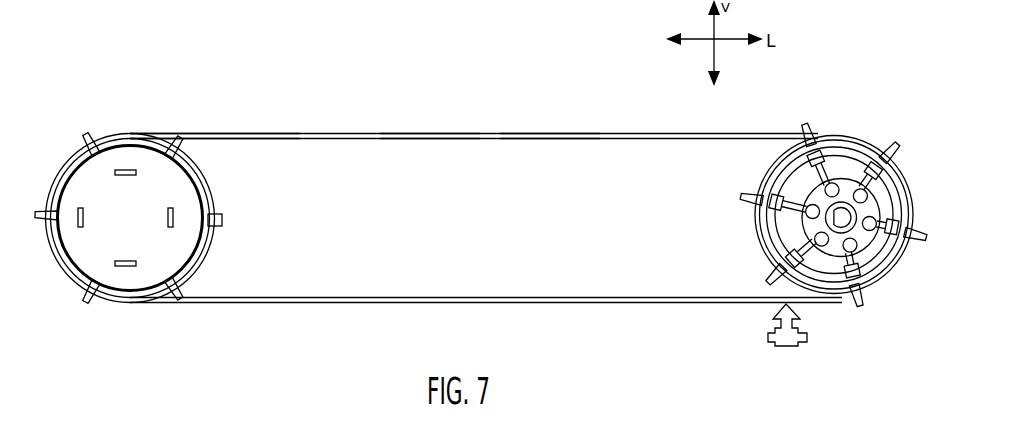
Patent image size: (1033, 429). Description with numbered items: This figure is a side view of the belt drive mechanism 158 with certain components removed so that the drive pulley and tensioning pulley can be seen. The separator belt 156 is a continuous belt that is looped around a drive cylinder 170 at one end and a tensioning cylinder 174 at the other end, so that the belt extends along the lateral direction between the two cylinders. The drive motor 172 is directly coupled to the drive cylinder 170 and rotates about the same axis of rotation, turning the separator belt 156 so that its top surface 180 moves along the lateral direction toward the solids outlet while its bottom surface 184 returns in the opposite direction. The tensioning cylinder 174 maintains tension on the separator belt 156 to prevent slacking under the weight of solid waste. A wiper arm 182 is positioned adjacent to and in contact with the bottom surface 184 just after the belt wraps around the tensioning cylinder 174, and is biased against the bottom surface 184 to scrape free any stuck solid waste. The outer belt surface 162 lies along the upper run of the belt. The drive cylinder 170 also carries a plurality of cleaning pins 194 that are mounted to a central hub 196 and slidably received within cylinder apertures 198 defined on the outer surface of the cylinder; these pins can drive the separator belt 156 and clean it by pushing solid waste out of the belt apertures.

The separator belt 156 is at (362, 127).
The belt drive mechanism 158 is at (106, 322).
The outer belt surface 162 is at (530, 133).
The drive cylinder 170 is at (161, 128).
The drive motor 172 is at (146, 229).
The tensioning cylinder 174 is at (859, 136).
The top surface 180 is at (428, 127).
The wiper arm 182 is at (787, 336).
The bottom surface 184 is at (631, 307).
The cleaning pins 194 is at (87, 136).
The central hub 196 is at (862, 207).
The cylinder apertures 198 is at (224, 238).